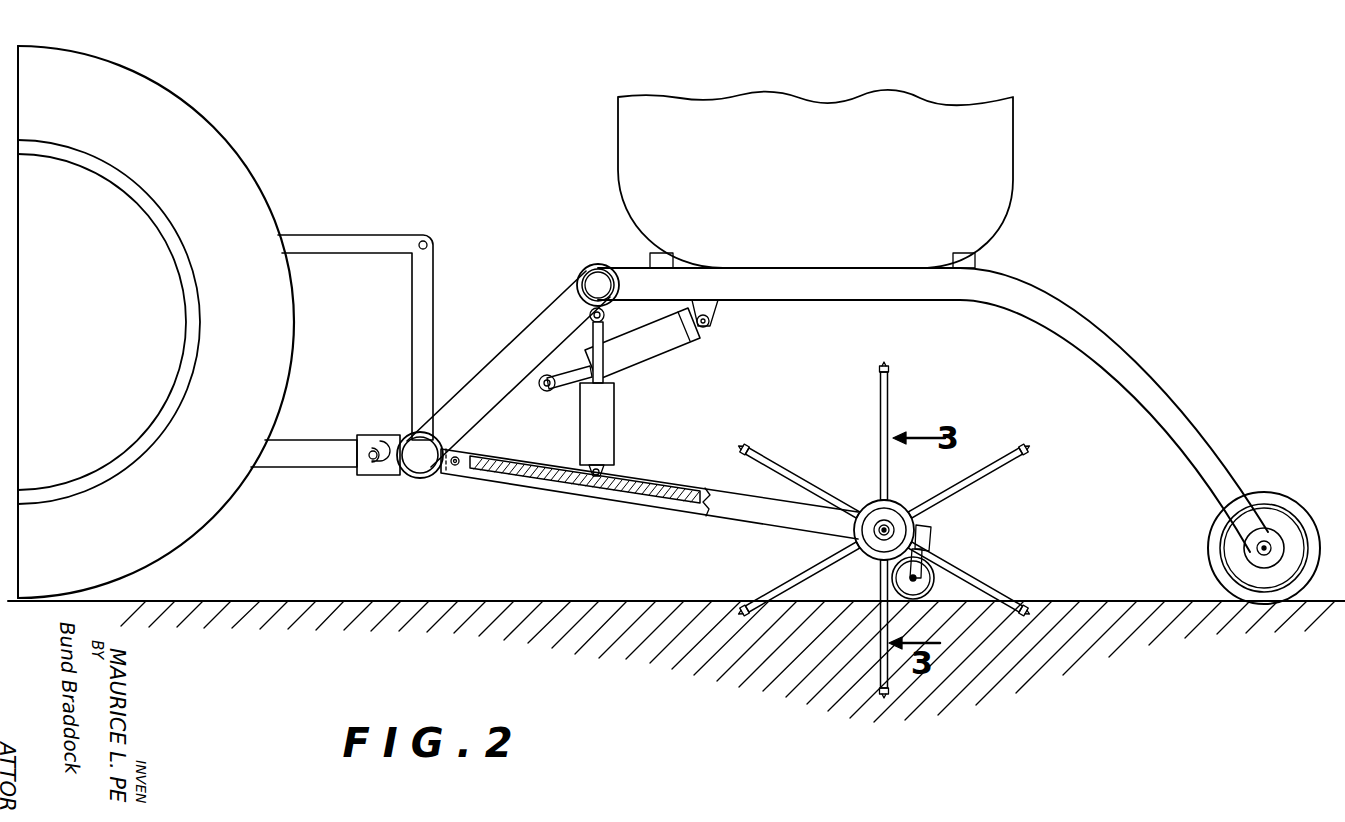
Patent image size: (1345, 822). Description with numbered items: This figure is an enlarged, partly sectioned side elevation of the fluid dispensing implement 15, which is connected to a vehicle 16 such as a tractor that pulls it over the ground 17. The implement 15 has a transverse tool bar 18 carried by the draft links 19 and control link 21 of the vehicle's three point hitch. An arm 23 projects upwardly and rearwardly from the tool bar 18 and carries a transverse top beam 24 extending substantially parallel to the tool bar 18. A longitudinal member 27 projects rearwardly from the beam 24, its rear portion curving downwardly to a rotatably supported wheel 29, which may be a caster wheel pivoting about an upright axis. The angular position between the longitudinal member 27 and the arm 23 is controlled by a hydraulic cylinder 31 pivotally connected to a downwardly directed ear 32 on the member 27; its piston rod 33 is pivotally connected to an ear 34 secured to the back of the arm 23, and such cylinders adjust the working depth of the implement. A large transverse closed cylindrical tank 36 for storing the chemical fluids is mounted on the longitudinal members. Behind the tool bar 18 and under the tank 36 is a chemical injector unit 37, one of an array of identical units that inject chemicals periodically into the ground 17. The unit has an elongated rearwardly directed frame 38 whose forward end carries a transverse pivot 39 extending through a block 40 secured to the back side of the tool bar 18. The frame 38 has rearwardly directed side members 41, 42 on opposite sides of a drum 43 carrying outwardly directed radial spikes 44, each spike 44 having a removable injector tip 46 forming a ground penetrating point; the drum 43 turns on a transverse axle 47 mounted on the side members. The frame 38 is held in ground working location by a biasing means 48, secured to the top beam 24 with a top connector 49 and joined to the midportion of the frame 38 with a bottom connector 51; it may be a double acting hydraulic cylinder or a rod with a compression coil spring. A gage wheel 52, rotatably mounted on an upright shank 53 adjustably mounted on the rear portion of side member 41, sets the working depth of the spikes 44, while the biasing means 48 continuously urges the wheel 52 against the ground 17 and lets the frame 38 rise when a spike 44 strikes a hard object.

The fluid dispensing implement 15 is at (553, 206).
The vehicle 16 is at (207, 156).
The ground 17 is at (582, 601).
The transverse tool bar 18 is at (420, 480).
The draft links 19 is at (315, 466).
The control link 21 is at (358, 246).
The arm 23 is at (548, 326).
The transverse top beam 24 is at (591, 266).
The longitudinal member 27 is at (1093, 313).
The wheel 29 is at (1290, 502).
The hydraulic cylinder 31 is at (655, 350).
The downwardly directed ear 32 is at (712, 323).
The piston rod 33 is at (571, 392).
The ear 34 is at (538, 390).
The closed cylindrical tank 36 is at (990, 146).
The chemical injector unit 37 is at (986, 389).
The frame 38 is at (668, 499).
The transverse pivot 39 is at (448, 472).
The block 40 is at (462, 468).
The side member 41 is at (705, 488).
The side member 42 is at (742, 502).
The drum 43 is at (870, 506).
The spikes 44 is at (880, 397).
The injector tip 46 is at (893, 369).
The transverse axle 47 is at (880, 544).
The biasing means 48 is at (606, 430).
The top connector 49 is at (605, 317).
The bottom connector 51 is at (592, 477).
The gage wheel 52 is at (932, 589).
The upright shank 53 is at (932, 521).